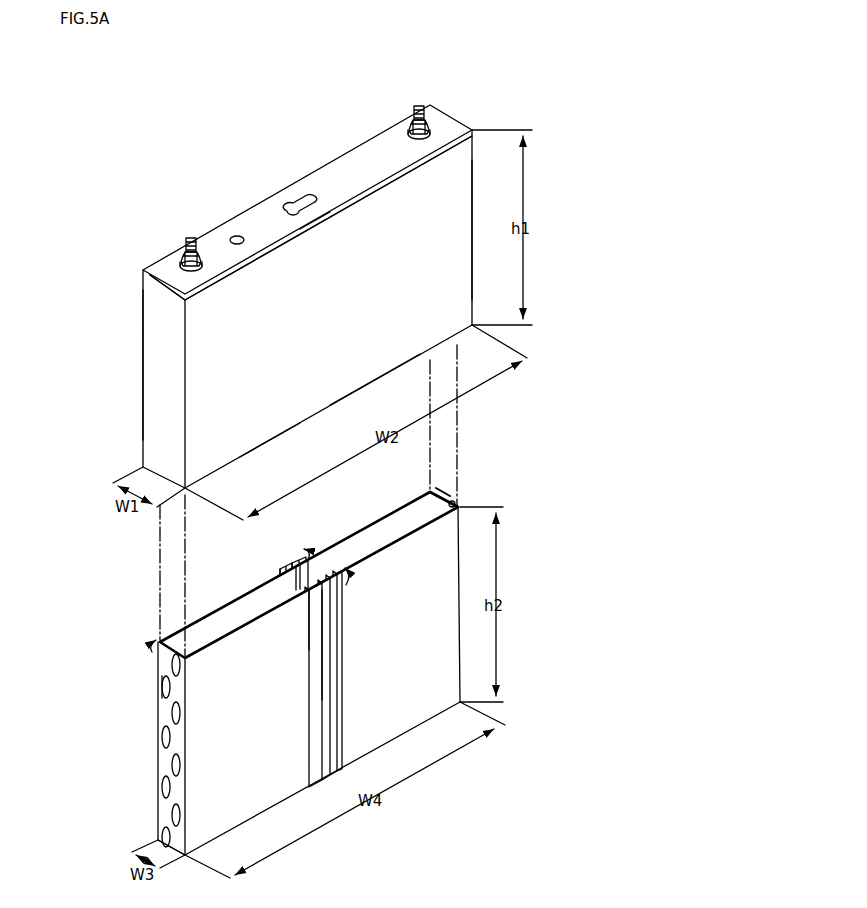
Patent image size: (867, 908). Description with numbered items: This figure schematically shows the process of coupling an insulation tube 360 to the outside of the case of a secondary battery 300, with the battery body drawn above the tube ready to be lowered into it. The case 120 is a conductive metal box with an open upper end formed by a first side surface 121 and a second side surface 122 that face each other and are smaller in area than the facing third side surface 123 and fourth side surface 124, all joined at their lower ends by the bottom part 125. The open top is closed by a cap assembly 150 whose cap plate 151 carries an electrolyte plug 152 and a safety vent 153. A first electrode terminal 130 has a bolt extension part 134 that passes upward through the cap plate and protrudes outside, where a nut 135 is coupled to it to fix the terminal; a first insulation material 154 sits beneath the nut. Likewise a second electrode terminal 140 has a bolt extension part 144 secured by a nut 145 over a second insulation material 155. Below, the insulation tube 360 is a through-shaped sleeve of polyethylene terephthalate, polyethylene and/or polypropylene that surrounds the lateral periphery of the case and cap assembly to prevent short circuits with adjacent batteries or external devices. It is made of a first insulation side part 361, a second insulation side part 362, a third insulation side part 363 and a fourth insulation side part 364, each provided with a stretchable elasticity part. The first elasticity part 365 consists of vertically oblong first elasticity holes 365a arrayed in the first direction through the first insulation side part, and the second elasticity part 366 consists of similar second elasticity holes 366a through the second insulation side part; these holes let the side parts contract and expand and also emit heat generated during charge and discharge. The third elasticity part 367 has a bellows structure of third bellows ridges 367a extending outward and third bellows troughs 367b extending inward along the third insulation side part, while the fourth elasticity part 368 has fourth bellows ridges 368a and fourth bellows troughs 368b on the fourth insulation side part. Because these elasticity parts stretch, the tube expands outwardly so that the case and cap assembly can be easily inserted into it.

The secondary battery 300 is at (126, 107).
The case 120 is at (140, 360).
The first side surface 121 is at (150, 405).
The second side surface 122 is at (475, 190).
The third side surface 123 is at (373, 372).
The fourth side surface 124 is at (143, 311).
The bottom part 125 is at (276, 440).
The first electrode terminal 130 is at (157, 234).
The bolt extension part 134 is at (192, 236).
The nut 135 is at (183, 255).
The second electrode terminal 140 is at (426, 105).
The bolt extension part 144 is at (413, 113).
The nut 145 is at (429, 124).
The cap assembly 150 is at (262, 206).
The cap plate 151 is at (337, 158).
The electrolyte plug 152 is at (232, 235).
The safety vent 153 is at (300, 202).
The first insulation material 154 is at (180, 262).
The second insulation material 155 is at (425, 128).
The insulation tube 360 is at (132, 747).
The first insulation side part 361 is at (157, 785).
The second insulation side part 362 is at (460, 507).
The third insulation side part 363 is at (270, 805).
The fourth insulation side part 364 is at (228, 612).
The first elasticity part 365 is at (161, 682).
The first elasticity holes 365a is at (163, 686).
The second elasticity part 366 is at (447, 490).
The second elasticity holes 366a is at (455, 504).
The third elasticity part 367 is at (345, 767).
The third bellows ridge 367a is at (328, 595).
The third bellows trough 367b is at (300, 596).
The fourth elasticity part 368 is at (291, 558).
The fourth bellows ridge 368a is at (279, 572).
The fourth bellows trough 368b is at (287, 563).